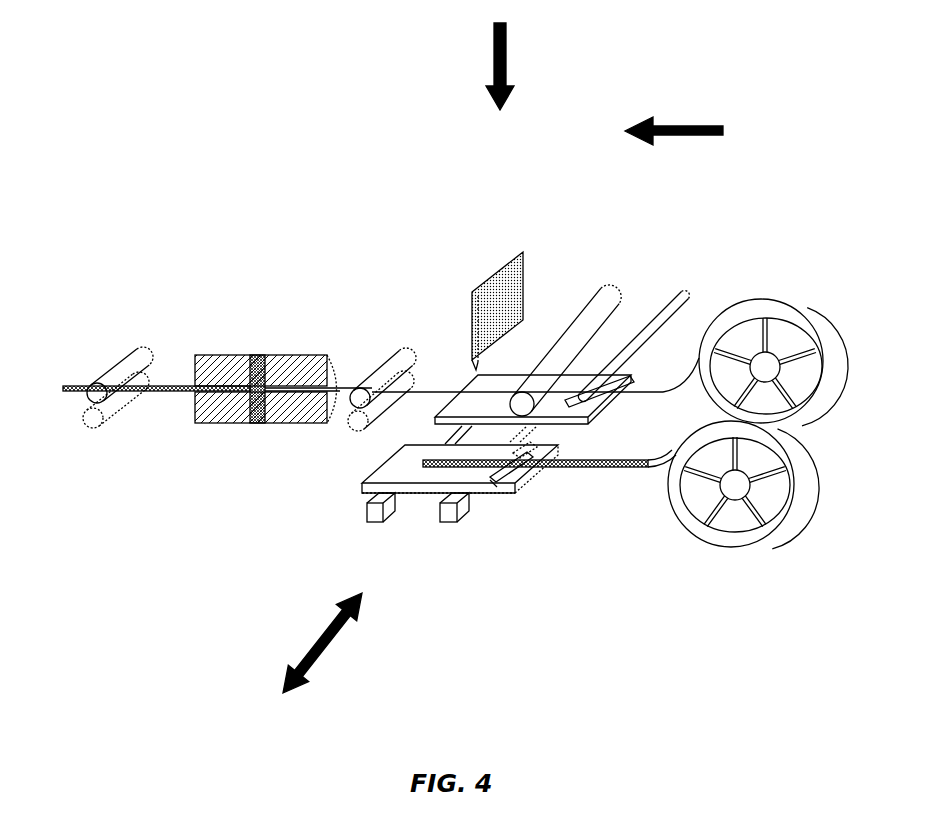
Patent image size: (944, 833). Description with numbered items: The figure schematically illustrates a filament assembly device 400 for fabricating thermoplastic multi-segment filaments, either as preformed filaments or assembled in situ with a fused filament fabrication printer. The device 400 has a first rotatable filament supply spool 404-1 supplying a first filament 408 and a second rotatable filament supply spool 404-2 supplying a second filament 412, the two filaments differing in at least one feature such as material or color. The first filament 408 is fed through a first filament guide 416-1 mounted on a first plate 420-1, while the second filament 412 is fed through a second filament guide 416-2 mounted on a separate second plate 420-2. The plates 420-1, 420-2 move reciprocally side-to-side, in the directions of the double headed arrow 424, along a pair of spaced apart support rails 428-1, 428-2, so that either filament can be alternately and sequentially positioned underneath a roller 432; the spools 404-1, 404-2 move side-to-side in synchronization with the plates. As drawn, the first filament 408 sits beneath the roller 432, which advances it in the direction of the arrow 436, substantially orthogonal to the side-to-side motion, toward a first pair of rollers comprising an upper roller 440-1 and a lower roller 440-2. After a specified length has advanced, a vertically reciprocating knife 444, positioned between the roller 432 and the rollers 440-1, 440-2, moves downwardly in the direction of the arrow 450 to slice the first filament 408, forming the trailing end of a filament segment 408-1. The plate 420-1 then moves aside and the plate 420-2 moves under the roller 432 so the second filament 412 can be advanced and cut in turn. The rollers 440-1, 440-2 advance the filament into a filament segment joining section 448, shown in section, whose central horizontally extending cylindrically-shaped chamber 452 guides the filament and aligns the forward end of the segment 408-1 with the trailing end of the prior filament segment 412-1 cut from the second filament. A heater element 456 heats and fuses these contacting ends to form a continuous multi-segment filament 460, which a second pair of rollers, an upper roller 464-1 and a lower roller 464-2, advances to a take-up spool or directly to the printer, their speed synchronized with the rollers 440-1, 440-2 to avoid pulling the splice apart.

The filament assembly device 400 is at (248, 95).
The first rotatable filament supply spool 404-1 is at (832, 302).
The second rotatable filament supply spool 404-2 is at (712, 550).
The first filament 408 is at (663, 392).
The filament segment 408-1 is at (452, 388).
The second filament 412 is at (470, 465).
The filament segment 412-1 is at (232, 386).
The first filament guide 416-1 is at (592, 393).
The second filament guide 416-2 is at (515, 470).
The first plate 420-1 is at (565, 358).
The second plate 420-2 is at (495, 487).
The double headed arrow 424 is at (323, 637).
The support rail 428-1 is at (363, 522).
The support rail 428-2 is at (443, 521).
The roller 432 is at (600, 375).
The arrow 436 is at (688, 126).
The upper roller 440-1 is at (381, 366).
The lower roller 440-2 is at (348, 430).
The vertically reciprocating knife 444 is at (510, 272).
The filament segment joining section 448 is at (228, 428).
The arrow 450 is at (494, 48).
The central horizontally extending generally cylindrically-shaped chamber 452 is at (280, 382).
The heater element 456 is at (258, 350).
The multi-segment filament 460 is at (96, 388).
The upper roller 464-1 is at (115, 360).
The lower roller 464-2 is at (93, 435).